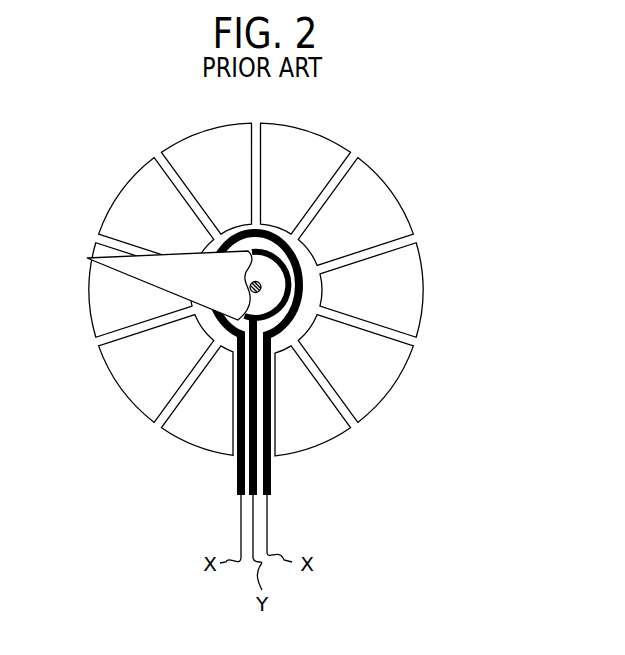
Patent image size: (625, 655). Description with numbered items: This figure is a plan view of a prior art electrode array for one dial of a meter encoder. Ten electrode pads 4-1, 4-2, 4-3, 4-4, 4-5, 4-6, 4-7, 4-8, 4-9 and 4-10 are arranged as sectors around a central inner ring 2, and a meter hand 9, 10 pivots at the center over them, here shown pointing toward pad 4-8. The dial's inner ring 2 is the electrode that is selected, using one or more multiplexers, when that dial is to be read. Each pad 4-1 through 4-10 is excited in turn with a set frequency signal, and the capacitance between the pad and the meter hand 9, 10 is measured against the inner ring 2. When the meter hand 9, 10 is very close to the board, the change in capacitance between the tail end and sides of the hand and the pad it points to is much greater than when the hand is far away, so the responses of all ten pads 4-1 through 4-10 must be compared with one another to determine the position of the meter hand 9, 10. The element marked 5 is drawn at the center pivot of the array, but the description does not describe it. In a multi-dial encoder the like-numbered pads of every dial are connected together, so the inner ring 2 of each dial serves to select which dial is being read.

The inner ring 2 is at (277, 257).
The center pivot electrode 5 is at (259, 284).
The pad 4-1 is at (310, 166).
The pad 4-2 is at (332, 221).
The pad 4-3 is at (363, 305).
The pad 4-4 is at (337, 381).
The pad 4-5 is at (278, 429).
The pad 4-6 is at (186, 431).
The pad 4-7 is at (126, 365).
The pad 4-8 is at (98, 302).
The pad 4-9 is at (127, 213).
The pad 4-10 is at (195, 172).
The meter hand 9 is at (169, 285).
The meter hand 10 is at (220, 286).